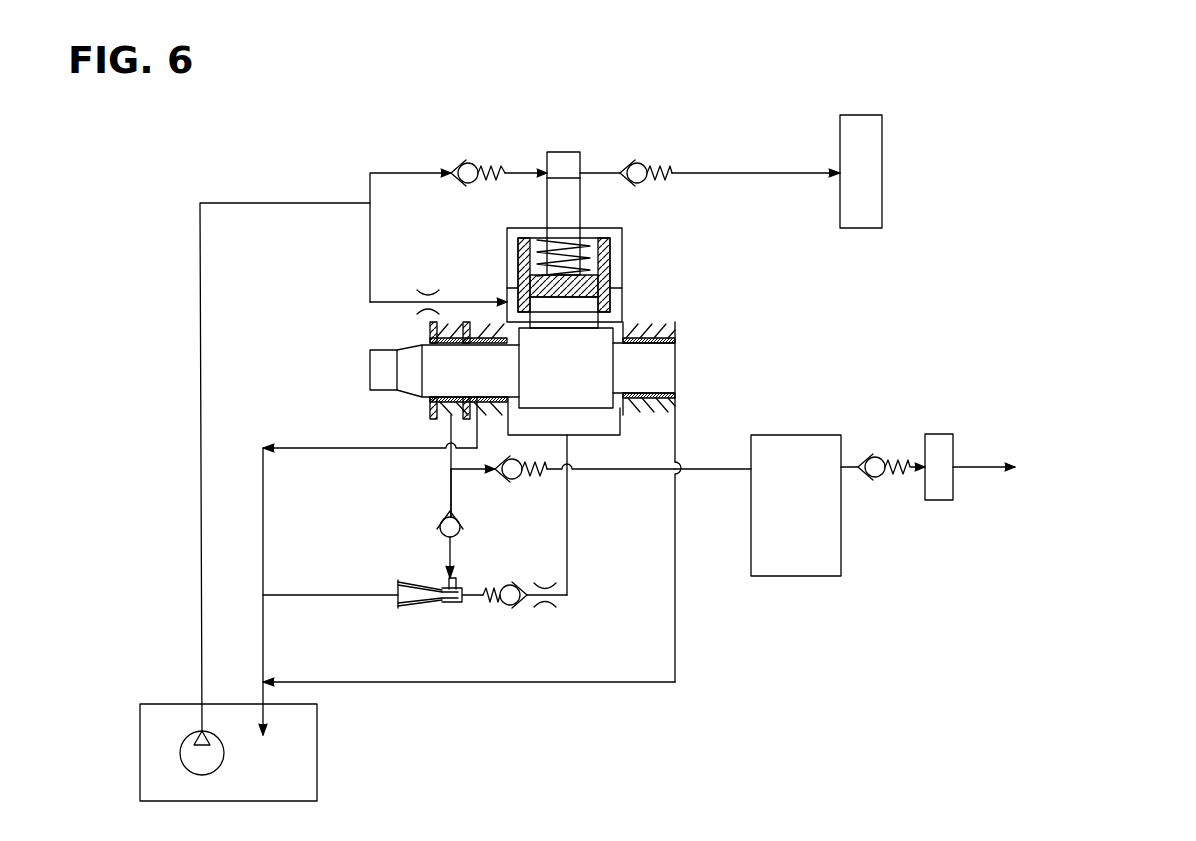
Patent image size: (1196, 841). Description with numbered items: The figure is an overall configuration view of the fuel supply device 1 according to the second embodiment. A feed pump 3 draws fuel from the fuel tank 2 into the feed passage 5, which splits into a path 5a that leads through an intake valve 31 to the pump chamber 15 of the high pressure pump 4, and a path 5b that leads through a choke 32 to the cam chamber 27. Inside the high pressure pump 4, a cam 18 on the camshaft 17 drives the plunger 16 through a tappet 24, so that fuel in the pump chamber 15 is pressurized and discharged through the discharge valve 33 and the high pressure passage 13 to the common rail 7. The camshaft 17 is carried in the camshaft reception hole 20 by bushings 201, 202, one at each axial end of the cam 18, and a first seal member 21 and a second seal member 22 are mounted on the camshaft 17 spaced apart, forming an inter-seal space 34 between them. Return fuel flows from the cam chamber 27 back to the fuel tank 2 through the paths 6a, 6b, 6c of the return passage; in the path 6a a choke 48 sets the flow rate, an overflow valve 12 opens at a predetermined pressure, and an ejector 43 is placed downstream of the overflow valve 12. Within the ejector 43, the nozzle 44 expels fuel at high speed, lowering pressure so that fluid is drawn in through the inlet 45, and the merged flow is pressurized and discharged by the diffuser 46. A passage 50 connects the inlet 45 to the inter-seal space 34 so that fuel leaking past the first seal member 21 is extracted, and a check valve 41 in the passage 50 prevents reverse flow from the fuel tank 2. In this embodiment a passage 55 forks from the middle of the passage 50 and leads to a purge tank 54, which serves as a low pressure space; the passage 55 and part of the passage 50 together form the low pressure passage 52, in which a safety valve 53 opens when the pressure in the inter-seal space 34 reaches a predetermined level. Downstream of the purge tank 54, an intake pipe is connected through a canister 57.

The fuel supply device 1 is at (950, 128).
The fuel tank 2 is at (147, 760).
The feed pump 3 is at (190, 752).
The high pressure pump 4 is at (586, 162).
The feed passage 5 is at (302, 203).
The path 5a is at (420, 173).
The path 5b is at (400, 302).
The path 6a is at (568, 539).
The path 6b is at (305, 448).
The path 6c is at (675, 656).
The common rail 7 is at (866, 228).
The overflow valve 12 is at (510, 607).
The high pressure passage 13 is at (752, 173).
The pump chamber 15 is at (553, 160).
The plunger 16 is at (563, 207).
The camshaft 17 is at (412, 358).
The cam 18 is at (597, 383).
The camshaft reception hole 20 is at (494, 412).
The first seal member 21 is at (466, 412).
The second seal member 22 is at (433, 400).
The tappet 24 is at (610, 280).
The cam chamber 27 is at (615, 432).
The intake valve 31 is at (468, 160).
The choke 32 is at (428, 296).
The discharge valve 33 is at (650, 160).
The inter-seal space 34 is at (458, 410).
The check valve 41 is at (461, 527).
The ejector 43 is at (398, 584).
The nozzle 44 is at (450, 607).
The inlet 45 is at (455, 578).
The diffuser 46 is at (408, 607).
The choke 48 is at (545, 608).
The passage 50 is at (450, 495).
The low pressure passage 52 is at (627, 470).
The safety valve 53 is at (517, 480).
The purge tank 54 is at (793, 576).
The passage 55 is at (478, 470).
The canister 57 is at (940, 500).
The bushing 201 is at (470, 326).
The bushing 202 is at (655, 330).